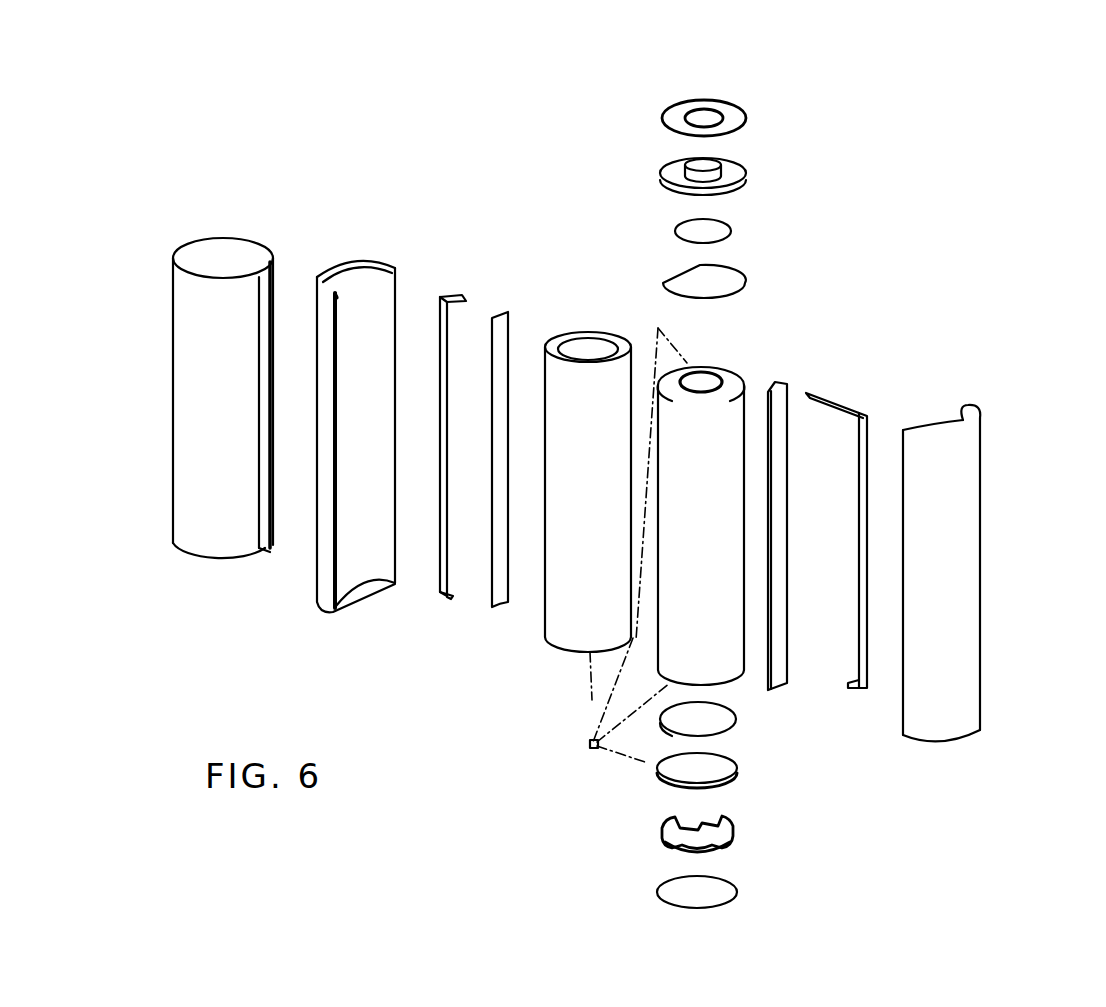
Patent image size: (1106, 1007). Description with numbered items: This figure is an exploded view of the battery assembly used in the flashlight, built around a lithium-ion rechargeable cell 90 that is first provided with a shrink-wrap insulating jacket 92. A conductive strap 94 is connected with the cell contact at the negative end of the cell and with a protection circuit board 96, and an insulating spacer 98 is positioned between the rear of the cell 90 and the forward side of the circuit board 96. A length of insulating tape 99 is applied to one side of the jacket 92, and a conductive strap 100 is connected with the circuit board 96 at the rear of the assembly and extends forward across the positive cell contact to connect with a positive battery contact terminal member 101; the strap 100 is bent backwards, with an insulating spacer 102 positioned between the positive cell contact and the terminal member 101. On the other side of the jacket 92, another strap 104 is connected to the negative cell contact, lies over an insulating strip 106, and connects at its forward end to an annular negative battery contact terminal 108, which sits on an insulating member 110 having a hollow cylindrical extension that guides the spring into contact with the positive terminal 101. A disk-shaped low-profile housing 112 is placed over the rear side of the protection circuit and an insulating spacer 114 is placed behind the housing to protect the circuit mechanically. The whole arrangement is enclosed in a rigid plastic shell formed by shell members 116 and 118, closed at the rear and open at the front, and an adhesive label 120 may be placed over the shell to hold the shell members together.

The Li-ion rechargeable cell 90 is at (746, 374).
The shrink-wrap insulating jacket 92 is at (547, 340).
The conductive strap 94 is at (588, 748).
The protection circuit board 96 is at (742, 777).
The insulating spacer 98 is at (740, 727).
The insulating tape 99 is at (788, 384).
The conductive strap 100 is at (869, 410).
The positive battery contact terminal member 101 is at (674, 226).
The insulating spacer 102 is at (664, 280).
The strap 104 is at (439, 296).
The insulating strip 106 is at (496, 314).
The annular negative battery contact terminal 108 is at (672, 101).
The insulating member 110 is at (662, 166).
The disk-shaped low-profile housing 112 is at (739, 838).
The insulating spacer 114 is at (732, 906).
The shell member 116 is at (326, 262).
The shell member 118 is at (984, 418).
The adhesive label 120 is at (210, 240).